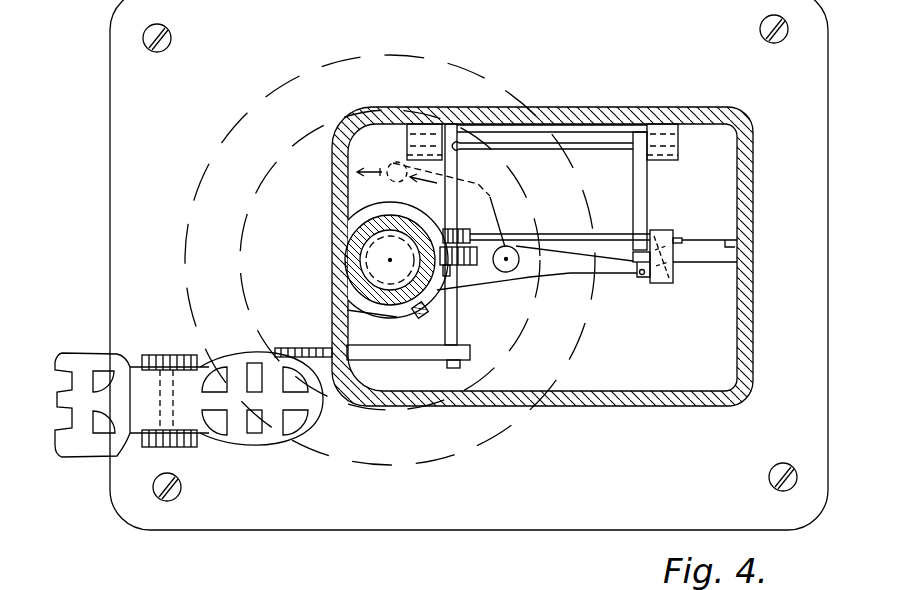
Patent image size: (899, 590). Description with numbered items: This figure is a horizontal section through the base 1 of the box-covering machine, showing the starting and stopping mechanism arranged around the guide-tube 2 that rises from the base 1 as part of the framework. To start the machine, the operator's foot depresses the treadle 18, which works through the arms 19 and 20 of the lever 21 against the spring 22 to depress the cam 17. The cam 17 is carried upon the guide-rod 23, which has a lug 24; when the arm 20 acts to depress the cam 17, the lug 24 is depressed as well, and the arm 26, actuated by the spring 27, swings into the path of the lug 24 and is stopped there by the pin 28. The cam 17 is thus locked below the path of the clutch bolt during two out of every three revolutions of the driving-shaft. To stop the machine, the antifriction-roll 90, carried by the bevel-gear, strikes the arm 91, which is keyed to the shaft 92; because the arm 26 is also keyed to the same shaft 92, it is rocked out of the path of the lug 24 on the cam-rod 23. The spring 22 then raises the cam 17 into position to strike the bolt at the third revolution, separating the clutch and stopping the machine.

The base 1 is at (580, 423).
The guide-tube 2 is at (343, 247).
The cam 17 is at (665, 284).
The treadle 18 is at (252, 446).
The arm 19 is at (458, 328).
The arm 20 is at (646, 204).
The lever 21 is at (577, 148).
The spring 22 is at (560, 236).
The guide-rod 23 is at (677, 267).
The lug 24 is at (639, 252).
The arm 26 is at (580, 273).
The spring 27 is at (473, 288).
The pin 28 is at (640, 277).
The antifriction-roll 90 is at (392, 163).
The arm 91 is at (493, 210).
The shaft 92 is at (512, 275).